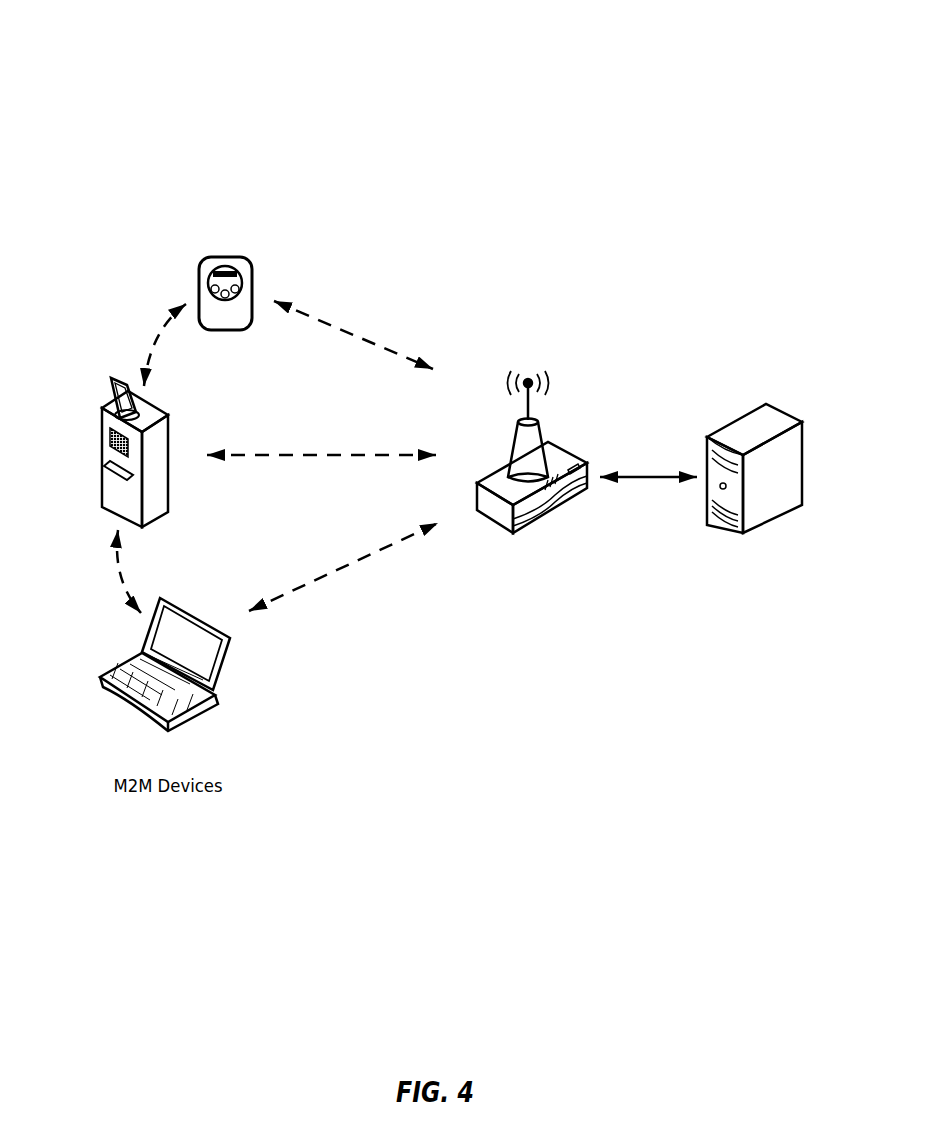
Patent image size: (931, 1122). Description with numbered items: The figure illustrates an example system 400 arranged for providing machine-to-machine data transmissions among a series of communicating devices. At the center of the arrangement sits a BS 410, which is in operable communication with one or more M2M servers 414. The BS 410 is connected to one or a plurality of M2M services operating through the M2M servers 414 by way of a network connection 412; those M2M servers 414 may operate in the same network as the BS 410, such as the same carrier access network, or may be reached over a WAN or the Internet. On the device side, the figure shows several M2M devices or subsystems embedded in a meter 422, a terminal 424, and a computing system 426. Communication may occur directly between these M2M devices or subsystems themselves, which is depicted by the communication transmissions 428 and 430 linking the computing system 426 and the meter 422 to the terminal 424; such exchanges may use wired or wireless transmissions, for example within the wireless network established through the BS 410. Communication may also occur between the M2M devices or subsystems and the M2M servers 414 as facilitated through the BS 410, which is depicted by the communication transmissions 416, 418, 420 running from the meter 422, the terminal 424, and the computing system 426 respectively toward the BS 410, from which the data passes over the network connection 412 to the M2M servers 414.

The system 400 is at (218, 52).
The BS 410 is at (567, 448).
The network connection 412 is at (648, 490).
The M2M servers 414 is at (780, 408).
The communication transmission 416 is at (353, 335).
The communication transmission 418 is at (321, 470).
The communication transmission 420 is at (343, 569).
The meter 422 is at (200, 268).
The terminal 424 is at (107, 433).
The computing system 426 is at (115, 698).
The communication transmission 428 is at (113, 571).
The communication transmission 430 is at (154, 345).